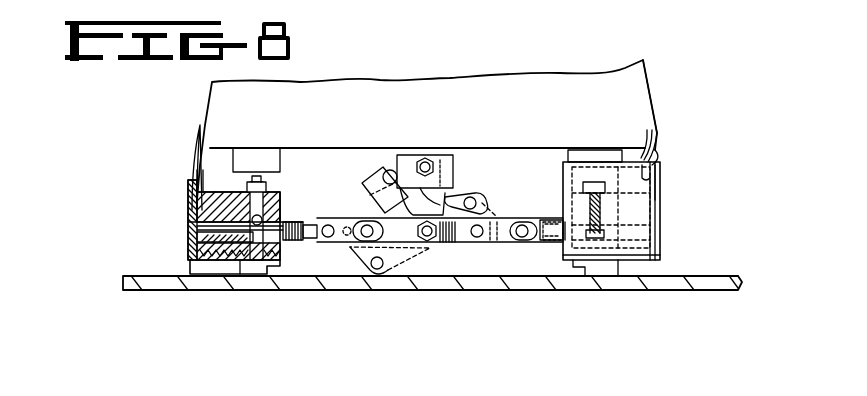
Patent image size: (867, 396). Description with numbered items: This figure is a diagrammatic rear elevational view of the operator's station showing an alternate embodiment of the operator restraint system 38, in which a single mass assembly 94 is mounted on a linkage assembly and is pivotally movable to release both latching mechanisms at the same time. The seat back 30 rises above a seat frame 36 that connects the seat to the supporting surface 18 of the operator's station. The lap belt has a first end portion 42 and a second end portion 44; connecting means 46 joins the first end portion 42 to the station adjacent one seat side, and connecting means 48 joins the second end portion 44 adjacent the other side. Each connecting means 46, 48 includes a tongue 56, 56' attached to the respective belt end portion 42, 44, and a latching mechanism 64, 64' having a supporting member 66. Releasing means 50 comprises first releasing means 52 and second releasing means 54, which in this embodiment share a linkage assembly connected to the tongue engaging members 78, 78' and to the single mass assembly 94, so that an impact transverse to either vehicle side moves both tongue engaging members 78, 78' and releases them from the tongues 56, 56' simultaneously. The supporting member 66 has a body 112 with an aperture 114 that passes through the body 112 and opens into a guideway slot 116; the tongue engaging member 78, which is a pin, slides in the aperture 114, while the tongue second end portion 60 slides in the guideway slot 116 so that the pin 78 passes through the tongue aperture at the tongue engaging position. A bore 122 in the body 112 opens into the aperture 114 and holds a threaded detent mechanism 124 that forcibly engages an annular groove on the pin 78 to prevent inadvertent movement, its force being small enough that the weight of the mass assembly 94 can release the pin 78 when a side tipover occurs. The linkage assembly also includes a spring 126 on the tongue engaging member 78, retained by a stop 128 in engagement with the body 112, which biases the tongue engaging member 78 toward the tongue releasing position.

The supporting surface 18 is at (706, 280).
The back 30 is at (433, 126).
The seat frame 36 is at (282, 160).
The operator restraint system 38 is at (420, 61).
The lap belt first end portion 42 is at (196, 150).
The lap belt second end portion 44 is at (656, 135).
The means for connecting the lap belt first end portion 46 is at (137, 209).
The means for connecting the lap belt second end portion 48 is at (675, 199).
The means for releasing 50 is at (586, 61).
The means for automatically releasing the lap belt first end portion 52 is at (307, 268).
The means for automatically releasing the lap belt second end portion 54 is at (530, 270).
The tongue 56 is at (149, 170).
The tongue 56' is at (693, 175).
The tongue second end portion 60 is at (198, 240).
The latching mechanism 64 is at (321, 217).
The latching mechanism 64' is at (530, 216).
The supporting member 66 is at (281, 185).
The tongue engaging member 78 is at (215, 232).
The tongue engaging member 78' is at (650, 210).
The mass assembly 94 is at (453, 168).
The body 112 is at (207, 232).
The aperture 114 is at (240, 232).
The guideway slot 116 is at (200, 197).
The bore 122 is at (260, 192).
The detent mechanism 124 is at (283, 206).
The spring 126 is at (296, 245).
The stop 128 is at (330, 255).